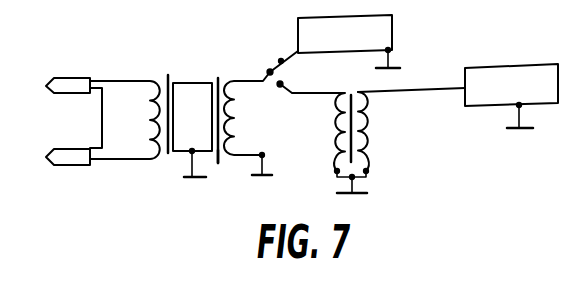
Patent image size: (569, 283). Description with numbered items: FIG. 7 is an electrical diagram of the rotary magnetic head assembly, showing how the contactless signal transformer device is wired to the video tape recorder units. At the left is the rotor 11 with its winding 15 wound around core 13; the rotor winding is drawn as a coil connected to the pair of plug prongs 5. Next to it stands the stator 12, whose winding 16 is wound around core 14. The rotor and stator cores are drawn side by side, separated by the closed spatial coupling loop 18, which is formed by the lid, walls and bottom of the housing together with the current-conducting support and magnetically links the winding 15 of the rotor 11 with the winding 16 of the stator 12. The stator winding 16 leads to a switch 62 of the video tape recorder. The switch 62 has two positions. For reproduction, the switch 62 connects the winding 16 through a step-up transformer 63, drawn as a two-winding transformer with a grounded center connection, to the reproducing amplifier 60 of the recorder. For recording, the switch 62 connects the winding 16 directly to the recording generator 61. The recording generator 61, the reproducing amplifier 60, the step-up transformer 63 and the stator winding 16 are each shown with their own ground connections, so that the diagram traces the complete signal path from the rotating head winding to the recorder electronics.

The plug prongs 5 is at (72, 92).
The rotor 11 is at (163, 163).
The stator 12 is at (226, 66).
The core 13 is at (186, 72).
The core 14 is at (219, 166).
The winding 15 is at (150, 105).
The winding 16 is at (234, 109).
The closed spatial coupling loop 18 is at (217, 71).
The reproducing amplifier 60 is at (458, 96).
The recording generator 61 is at (349, 41).
The switch 62 is at (281, 60).
The step-up transformer 63 is at (370, 158).